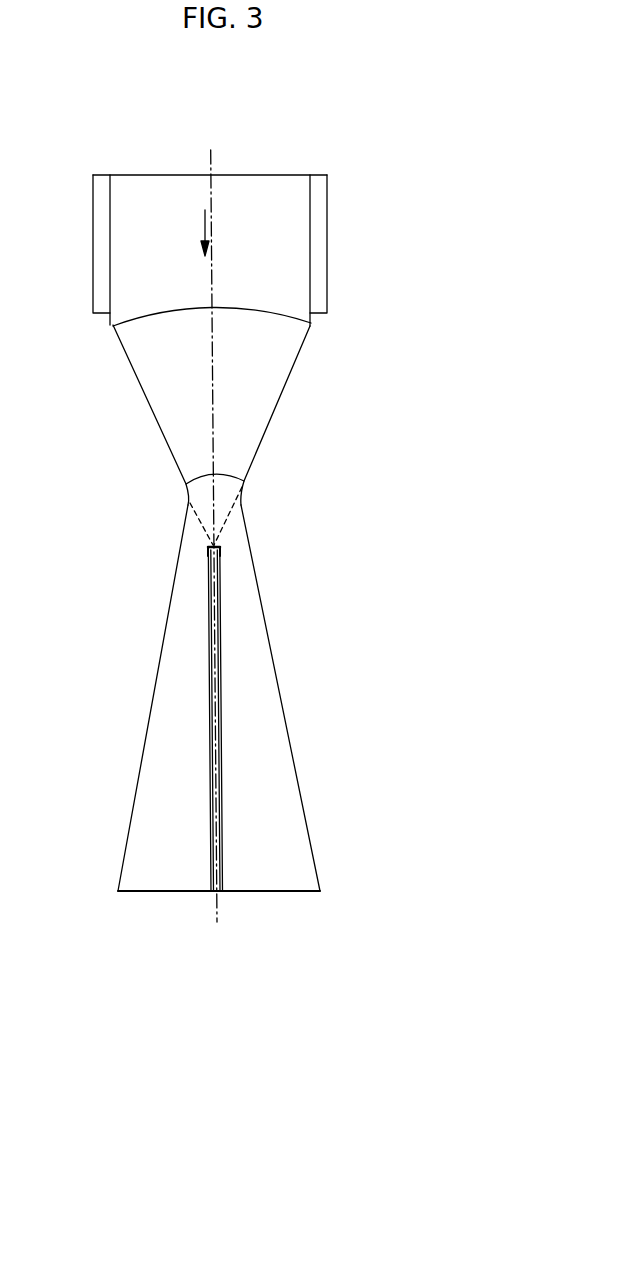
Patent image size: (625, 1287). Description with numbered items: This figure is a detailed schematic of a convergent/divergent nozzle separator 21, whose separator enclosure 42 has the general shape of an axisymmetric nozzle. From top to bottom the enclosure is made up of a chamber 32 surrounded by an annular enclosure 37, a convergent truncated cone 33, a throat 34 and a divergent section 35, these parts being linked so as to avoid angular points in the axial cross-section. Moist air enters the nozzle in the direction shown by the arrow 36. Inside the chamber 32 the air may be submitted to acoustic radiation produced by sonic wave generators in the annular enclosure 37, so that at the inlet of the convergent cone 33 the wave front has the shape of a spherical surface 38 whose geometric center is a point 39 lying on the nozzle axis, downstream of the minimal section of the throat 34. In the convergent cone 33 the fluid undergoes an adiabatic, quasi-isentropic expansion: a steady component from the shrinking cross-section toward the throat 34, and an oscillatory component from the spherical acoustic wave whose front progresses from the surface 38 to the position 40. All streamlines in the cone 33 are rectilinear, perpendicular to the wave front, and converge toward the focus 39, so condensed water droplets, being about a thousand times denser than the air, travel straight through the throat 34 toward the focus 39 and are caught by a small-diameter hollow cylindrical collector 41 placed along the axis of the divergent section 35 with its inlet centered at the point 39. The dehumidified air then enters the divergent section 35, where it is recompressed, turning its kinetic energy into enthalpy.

The nozzle assembly 21 is at (150, 479).
The chamber 32 is at (288, 190).
The convergent truncated cone 33 is at (253, 392).
The throat 34 is at (205, 503).
The divergent section 35 is at (280, 780).
The arrow 36 is at (205, 227).
The annular enclosure 37 is at (317, 255).
The spherical surface 38 is at (280, 317).
The point 39 is at (218, 544).
The wave front position 40 is at (223, 473).
The hollow cylindrical collector 41 is at (218, 648).
The separator enclosure 42 is at (272, 415).